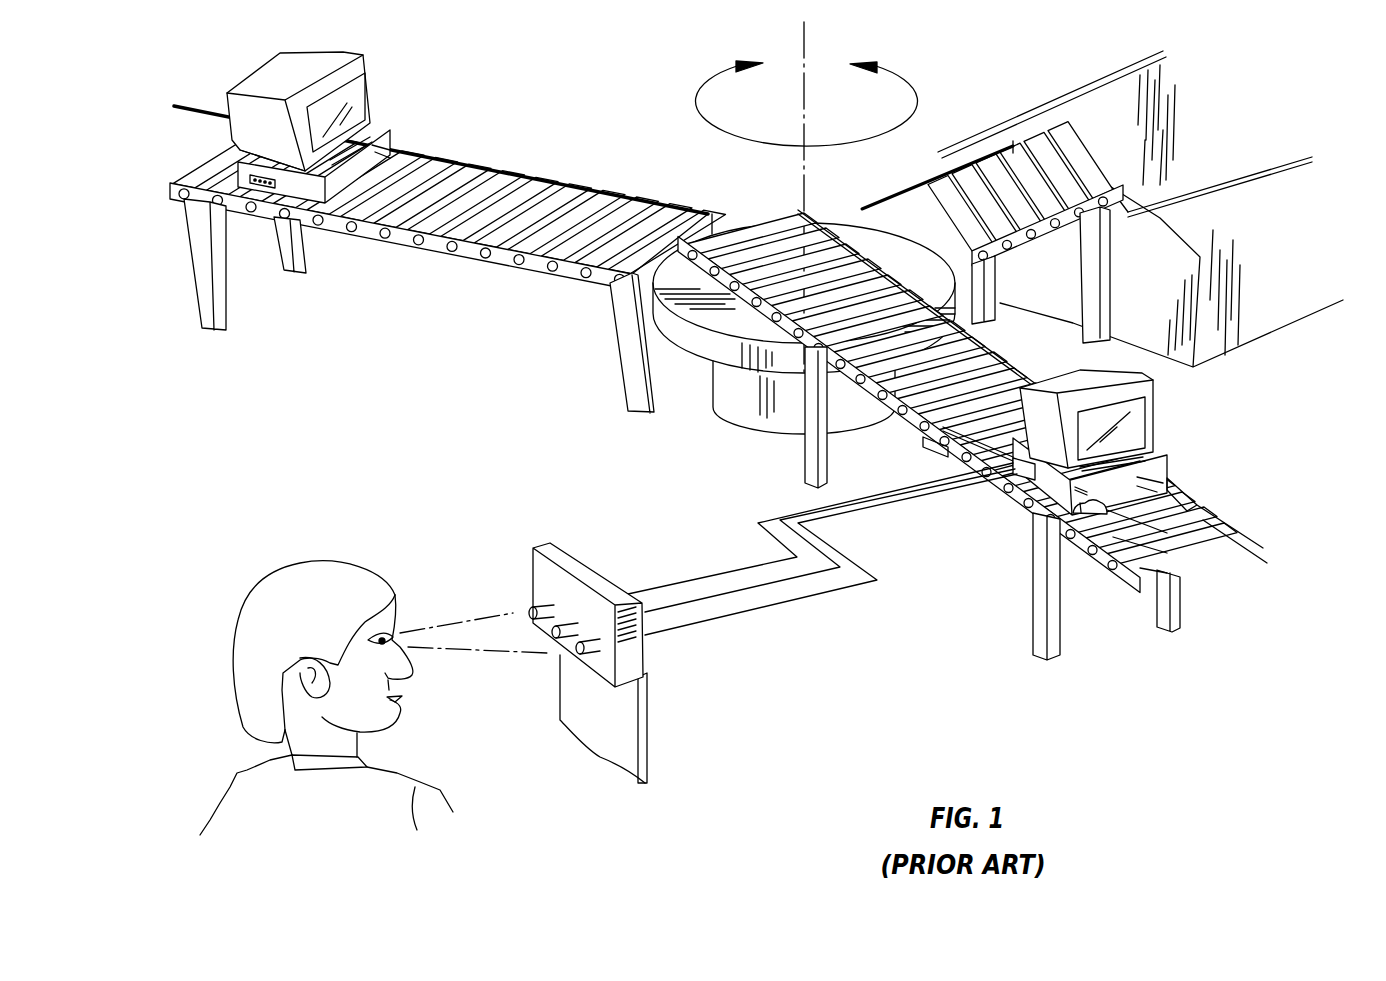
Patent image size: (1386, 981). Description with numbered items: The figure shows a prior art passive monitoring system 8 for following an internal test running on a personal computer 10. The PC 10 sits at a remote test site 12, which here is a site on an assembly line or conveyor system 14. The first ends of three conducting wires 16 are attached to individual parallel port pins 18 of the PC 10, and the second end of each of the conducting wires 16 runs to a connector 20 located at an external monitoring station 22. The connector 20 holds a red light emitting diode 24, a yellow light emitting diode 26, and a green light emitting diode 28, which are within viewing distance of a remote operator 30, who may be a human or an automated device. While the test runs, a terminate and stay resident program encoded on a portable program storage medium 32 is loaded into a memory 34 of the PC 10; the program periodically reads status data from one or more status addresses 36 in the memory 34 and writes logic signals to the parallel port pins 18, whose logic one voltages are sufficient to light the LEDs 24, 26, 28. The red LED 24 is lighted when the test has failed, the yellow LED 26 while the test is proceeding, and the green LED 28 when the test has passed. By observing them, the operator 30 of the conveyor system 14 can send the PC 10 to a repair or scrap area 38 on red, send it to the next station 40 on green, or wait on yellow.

The passive monitoring system 8 is at (918, 635).
The personal computer 10 is at (1167, 463).
The remote test site 12 is at (1183, 420).
The assembly line or conveyor system 14 is at (896, 412).
The conducting wires 16 is at (727, 617).
The parallel port pins 18 is at (1017, 474).
The connector 20 is at (570, 557).
The external monitoring station 22 is at (432, 551).
The red light emitting diode 24 is at (529, 610).
The yellow light emitting diode 26 is at (563, 653).
The green light emitting diode 28 is at (582, 655).
The remote operator 30 is at (252, 812).
The portable program storage medium 32 is at (1193, 505).
The memory 34 is at (1087, 514).
The status addresses 36 is at (1108, 563).
The repair or scrap area 38 is at (1262, 264).
The next station 40 is at (437, 90).